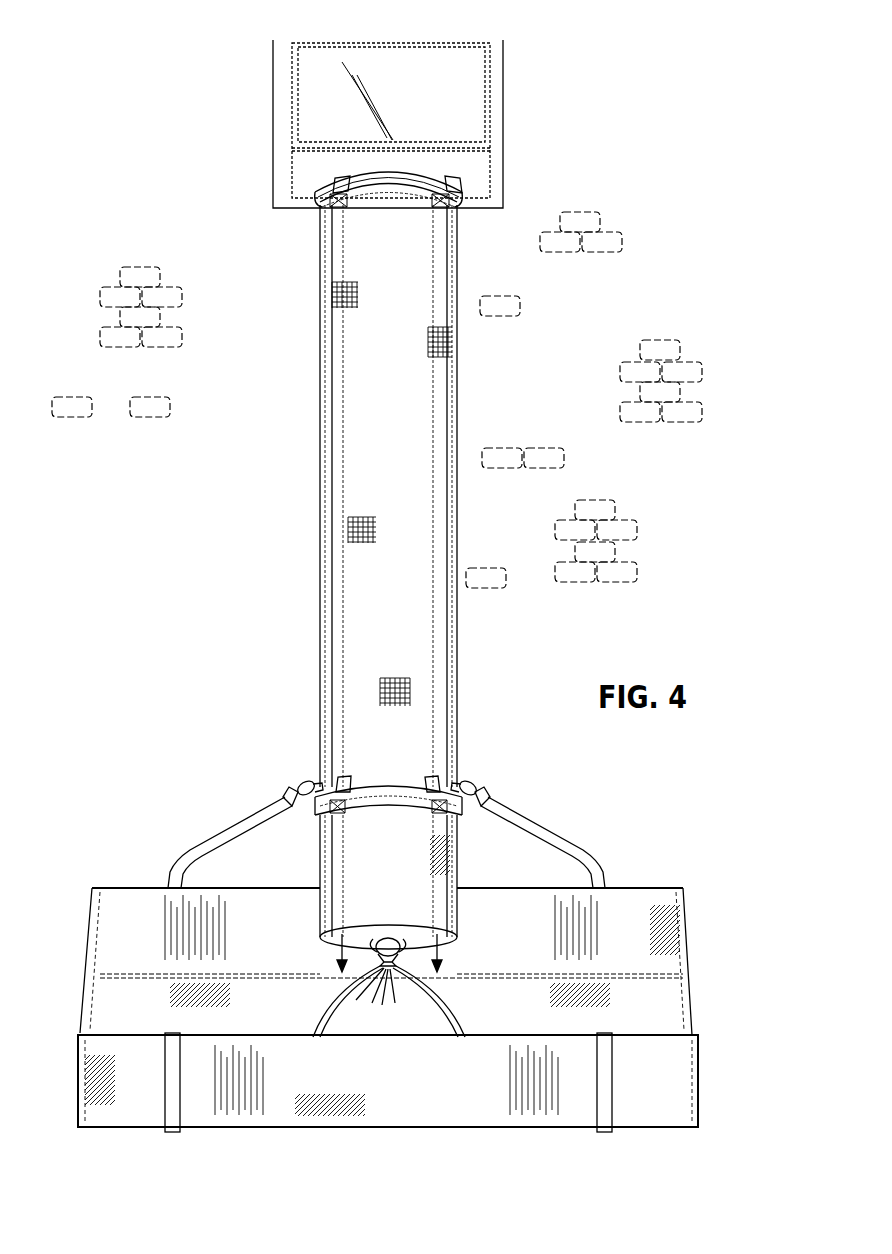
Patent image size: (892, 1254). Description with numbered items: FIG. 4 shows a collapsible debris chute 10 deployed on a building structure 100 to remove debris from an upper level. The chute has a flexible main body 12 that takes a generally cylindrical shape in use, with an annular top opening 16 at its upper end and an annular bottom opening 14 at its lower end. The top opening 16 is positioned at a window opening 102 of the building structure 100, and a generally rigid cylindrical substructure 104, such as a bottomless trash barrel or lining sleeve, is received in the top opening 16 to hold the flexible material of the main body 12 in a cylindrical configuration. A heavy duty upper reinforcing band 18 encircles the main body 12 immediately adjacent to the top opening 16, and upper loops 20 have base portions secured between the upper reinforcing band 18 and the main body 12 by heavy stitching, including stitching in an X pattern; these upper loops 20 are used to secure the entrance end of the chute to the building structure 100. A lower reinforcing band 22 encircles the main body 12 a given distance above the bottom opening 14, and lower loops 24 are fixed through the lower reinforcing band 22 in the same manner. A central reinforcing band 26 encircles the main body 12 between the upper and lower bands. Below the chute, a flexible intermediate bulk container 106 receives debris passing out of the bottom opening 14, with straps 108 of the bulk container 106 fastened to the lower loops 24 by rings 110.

The collapsible debris chute 10 is at (483, 355).
The main body 12 is at (440, 468).
The bottom opening 14 is at (413, 933).
The top opening 16 is at (410, 174).
The upper reinforcing band 18 is at (350, 203).
The upper loops 20 is at (321, 186).
The lower reinforcing band 22 is at (375, 785).
The lower loops 24 is at (340, 775).
The central reinforcing band 26 is at (433, 205).
The building structure 100 is at (181, 203).
The window opening 102 is at (280, 108).
The rigid cylindrical substructure 104 is at (458, 187).
The flexible intermediate bulk container 106 is at (145, 905).
The straps 108 is at (237, 830).
The rings 110 is at (478, 786).